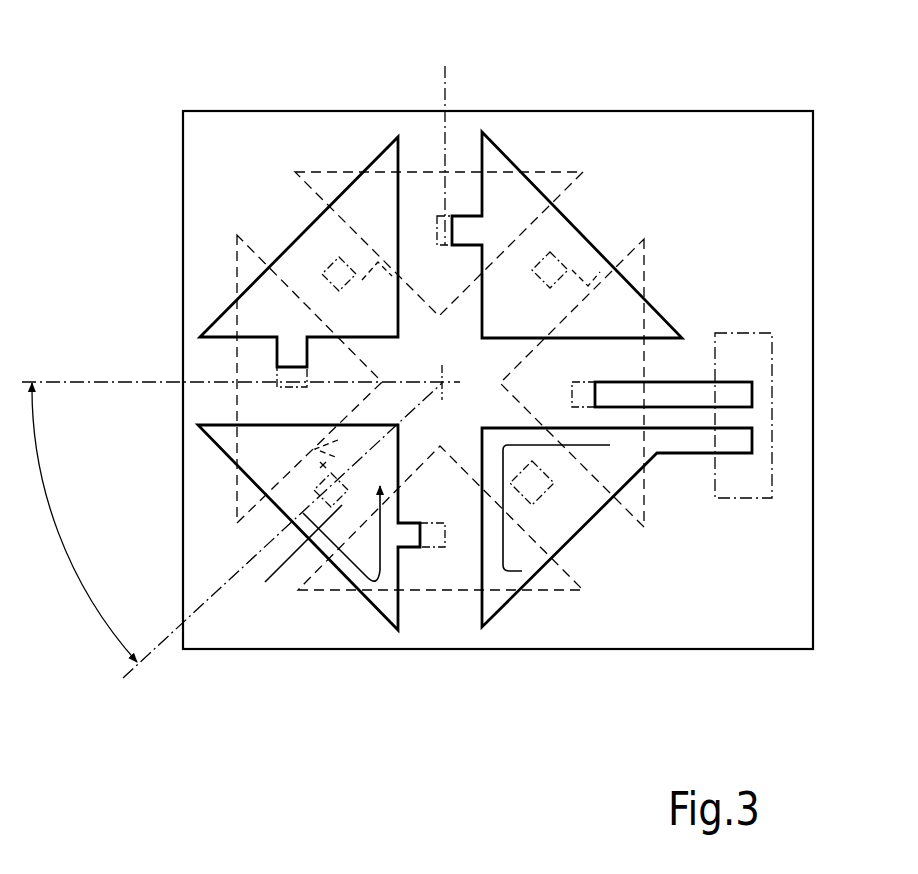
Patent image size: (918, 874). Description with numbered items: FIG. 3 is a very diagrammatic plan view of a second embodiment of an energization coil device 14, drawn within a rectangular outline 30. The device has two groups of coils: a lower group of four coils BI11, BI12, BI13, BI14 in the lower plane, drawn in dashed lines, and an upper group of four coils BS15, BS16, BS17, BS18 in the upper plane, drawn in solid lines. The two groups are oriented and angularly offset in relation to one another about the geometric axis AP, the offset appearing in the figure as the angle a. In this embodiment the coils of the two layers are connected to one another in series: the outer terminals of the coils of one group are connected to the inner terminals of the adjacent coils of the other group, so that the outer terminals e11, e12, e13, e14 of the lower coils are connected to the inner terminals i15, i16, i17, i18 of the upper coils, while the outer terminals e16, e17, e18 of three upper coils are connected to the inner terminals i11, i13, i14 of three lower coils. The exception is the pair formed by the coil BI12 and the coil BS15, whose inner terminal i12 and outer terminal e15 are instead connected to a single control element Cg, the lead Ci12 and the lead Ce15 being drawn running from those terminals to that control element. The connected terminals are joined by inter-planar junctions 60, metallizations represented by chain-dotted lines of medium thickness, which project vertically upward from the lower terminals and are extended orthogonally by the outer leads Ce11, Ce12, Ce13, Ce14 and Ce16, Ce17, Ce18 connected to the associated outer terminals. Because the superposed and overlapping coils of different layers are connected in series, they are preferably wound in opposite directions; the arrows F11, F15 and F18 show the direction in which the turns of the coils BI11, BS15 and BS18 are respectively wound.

The substrate / ground frame 30 is at (208, 110).
The energization coil device 14 is at (276, 74).
The upper-layer coil BS17 is at (398, 137).
The upper-layer coil BS16 is at (667, 320).
The upper-layer coil BS18 is at (230, 450).
The upper-layer coil BS15 is at (550, 585).
The lower-layer coil BI13 is at (439, 178).
The lower-layer coil BI14 is at (235, 392).
The lower-layer coil BI11 is at (328, 590).
The lower-layer coil BI12 is at (644, 527).
The feed line Ci12 is at (683, 392).
The control element Cg is at (752, 492).
The coupling element of patch BS15 Ce15 is at (697, 447).
The outer lead Ce17 is at (277, 348).
The outer lead Ce16 is at (462, 252).
The outer lead Ce18 is at (430, 548).
The outer lead Ce12 is at (596, 328).
The outer lead Ce13 is at (378, 287).
The outer lead Ce14 is at (351, 457).
The outer lead Ce11 is at (555, 508).
The inner terminal i17 is at (316, 287).
The inner terminal i16 is at (529, 279).
The inner terminal i18 is at (308, 508).
The inner terminal i15 is at (566, 471).
The feed point of patch BI14 i14 is at (377, 383).
The inner terminal i12 is at (550, 391).
The feed point of patch BI13 i13 is at (433, 221).
The feed point of patch BI11 i11 is at (443, 503).
The outer terminal e13 is at (380, 228).
The outer terminal e16 is at (523, 216).
The outer terminal e17 is at (288, 332).
The outer terminal e12 is at (627, 334).
The outer terminal e14 is at (300, 466).
The outer terminal e18 is at (395, 545).
The outer terminal e11 is at (577, 508).
The outer terminal e15 is at (657, 463).
The inter-planar junction 60 is at (450, 215).
The geometric axis AP is at (446, 388).
The angle a is at (237, 530).
The arrow F18 is at (311, 553).
The arrow F11 is at (447, 573).
The arrow F15 is at (565, 530).